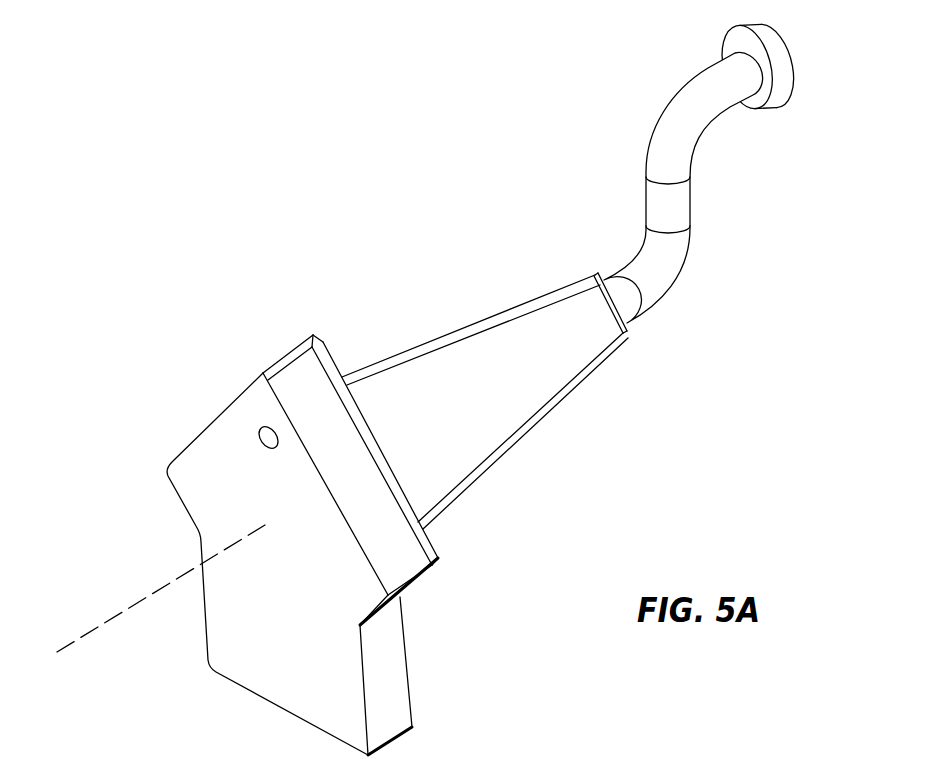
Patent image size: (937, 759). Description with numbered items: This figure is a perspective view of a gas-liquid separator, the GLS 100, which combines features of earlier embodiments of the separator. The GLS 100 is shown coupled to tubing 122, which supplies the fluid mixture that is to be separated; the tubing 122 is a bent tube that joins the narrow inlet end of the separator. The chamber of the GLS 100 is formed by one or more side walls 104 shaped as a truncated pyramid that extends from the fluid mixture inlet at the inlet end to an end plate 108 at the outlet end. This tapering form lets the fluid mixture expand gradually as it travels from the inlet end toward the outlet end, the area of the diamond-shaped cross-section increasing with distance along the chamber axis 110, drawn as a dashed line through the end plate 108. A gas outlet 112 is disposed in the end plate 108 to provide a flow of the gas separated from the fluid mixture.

The GLS 100 is at (433, 270).
The side walls 104 is at (533, 323).
The end plate 108 is at (298, 398).
The chamber axis 110 is at (152, 597).
The gas outlet 112 is at (258, 434).
The tubing 122 is at (686, 258).